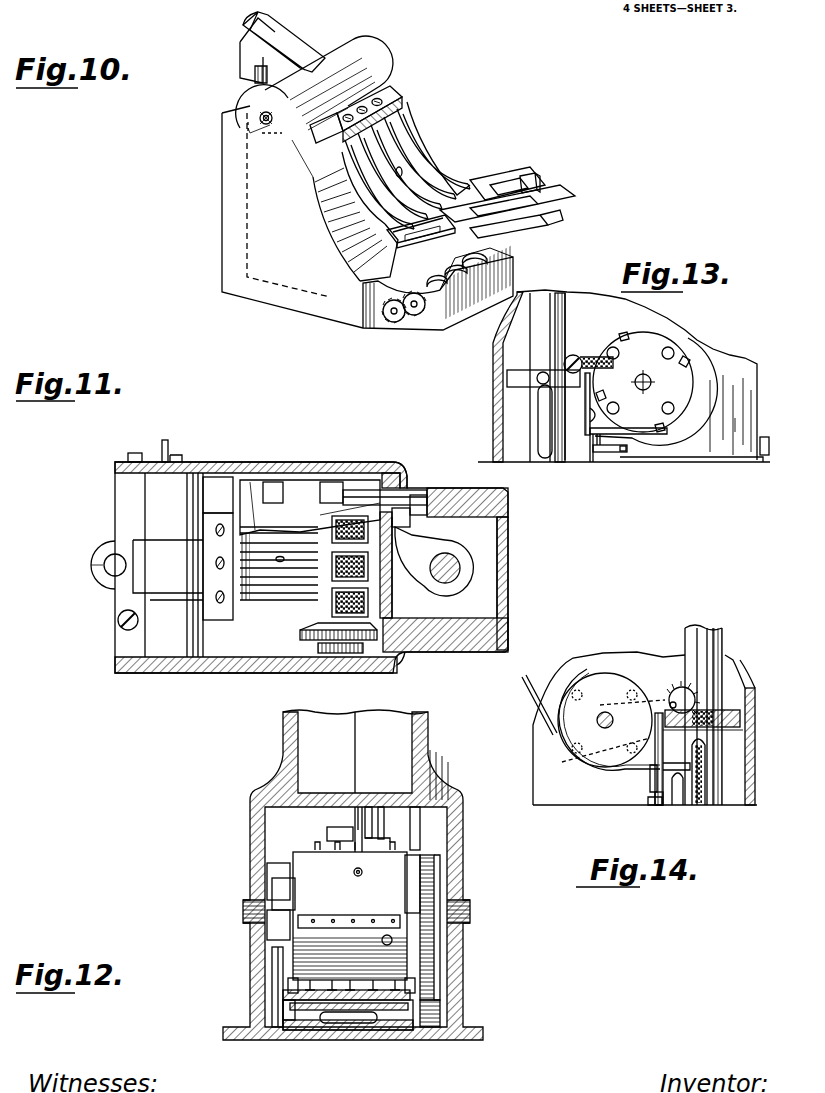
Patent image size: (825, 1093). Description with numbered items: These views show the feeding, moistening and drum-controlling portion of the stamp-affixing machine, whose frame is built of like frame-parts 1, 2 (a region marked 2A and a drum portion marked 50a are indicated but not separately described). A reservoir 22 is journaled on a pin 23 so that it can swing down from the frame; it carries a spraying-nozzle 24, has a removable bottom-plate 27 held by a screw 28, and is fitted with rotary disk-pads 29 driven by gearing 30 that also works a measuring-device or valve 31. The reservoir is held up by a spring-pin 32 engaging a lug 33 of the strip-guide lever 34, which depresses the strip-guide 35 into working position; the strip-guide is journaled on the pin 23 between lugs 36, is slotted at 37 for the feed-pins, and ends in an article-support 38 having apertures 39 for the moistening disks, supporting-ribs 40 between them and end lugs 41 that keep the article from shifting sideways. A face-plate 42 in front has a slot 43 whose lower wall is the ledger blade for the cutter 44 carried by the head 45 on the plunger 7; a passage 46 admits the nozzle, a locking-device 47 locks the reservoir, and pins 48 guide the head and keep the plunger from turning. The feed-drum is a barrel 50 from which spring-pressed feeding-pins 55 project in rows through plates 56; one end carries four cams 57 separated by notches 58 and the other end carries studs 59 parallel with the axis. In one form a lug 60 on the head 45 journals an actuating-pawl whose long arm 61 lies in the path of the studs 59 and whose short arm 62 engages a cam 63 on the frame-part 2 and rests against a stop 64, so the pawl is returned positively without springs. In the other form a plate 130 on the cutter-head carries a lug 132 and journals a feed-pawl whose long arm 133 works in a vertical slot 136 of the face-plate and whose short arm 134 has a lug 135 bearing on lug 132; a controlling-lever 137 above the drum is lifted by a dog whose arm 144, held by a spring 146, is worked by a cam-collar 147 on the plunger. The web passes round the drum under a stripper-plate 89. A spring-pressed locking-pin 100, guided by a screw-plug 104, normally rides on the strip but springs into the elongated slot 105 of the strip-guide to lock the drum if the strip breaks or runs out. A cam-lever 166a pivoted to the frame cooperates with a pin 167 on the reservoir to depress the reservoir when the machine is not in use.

In FIG. 13, the frame-part 1 is at (503, 410).
In FIG. 11, the frame-part 1 is at (311, 549).
In FIG. 12, the frame-part 1 is at (250, 834).
In FIG. 11, the frame-part 2 is at (185, 673).
In FIG. 12, the frame-part 2 is at (463, 842).
In FIG. 14, the frame-part 2 is at (755, 685).
In FIG. 14, the casing bottom 2A is at (655, 805).
In FIG. 12, the plunger 7 is at (351, 829).
In FIG. 14, the plunger 7 is at (722, 640).
In FIG. 10, the reservoir 22 is at (222, 248).
In FIG. 13, the reservoir 22 is at (719, 397).
In FIG. 11, the reservoir 22 is at (205, 652).
In FIG. 12, the reservoir 22 is at (295, 1032).
In FIG. 14, the reservoir 22 is at (565, 805).
In FIG. 10, the pin 23 is at (264, 126).
In FIG. 11, the pin 23 is at (183, 455).
In FIG. 13, the spraying-nozzle 24 is at (630, 443).
In FIG. 13, the removable bottom-plate 27 is at (680, 462).
In FIG. 13, the screw 28 is at (769, 448).
In FIG. 10, the rotary disk-pads 29 is at (445, 258).
In FIG. 11, the rotary disk-pads 29 is at (383, 583).
In FIG. 12, the rotary disk-pads 29 is at (370, 1025).
In FIG. 10, the gearing 30 is at (413, 318).
In FIG. 11, the gearing 30 is at (345, 655).
In FIG. 12, the gearing 30 is at (440, 960).
In FIG. 12, the measuring-device or valve 31 is at (322, 1032).
In FIG. 10, the spring-pin 32 is at (255, 77).
In FIG. 11, the spring-pin 32 is at (112, 580).
In FIG. 10, the lug 33 is at (245, 50).
In FIG. 10, the strip-guide lever 34 is at (272, 50).
In FIG. 11, the strip-guide lever 34 is at (150, 555).
In FIG. 10, the strip-guide 35 is at (402, 97).
In FIG. 11, the strip-guide 35 is at (235, 615).
In FIG. 12, the strip-guide 35 is at (290, 995).
In FIG. 14, the strip-guide 35 is at (524, 694).
In FIG. 10, the lugs 36 is at (378, 55).
In FIG. 11, the lugs 36 is at (133, 688).
In FIG. 10, the slot 37 is at (400, 138).
In FIG. 11, the slot 37 is at (300, 572).
In FIG. 12, the slot 37 is at (405, 982).
In FIG. 10, the article-support 38 is at (480, 182).
In FIG. 10, the apertures 39 is at (545, 193).
In FIG. 10, the supporting-ribs 40 is at (505, 218).
In FIG. 12, the supporting-ribs 40 is at (288, 1022).
In FIG. 10, the end lugs 41 is at (538, 182).
In FIG. 12, the end lugs 41 is at (288, 985).
In FIG. 13, the face-plate 42 is at (590, 458).
In FIG. 11, the face-plate 42 is at (400, 663).
In FIG. 14, the face-plate 42 is at (648, 770).
In FIG. 13, the slot 43 is at (590, 440).
In FIG. 14, the slot 43 is at (648, 792).
In FIG. 14, the cutter 44 is at (670, 759).
In FIG. 13, the head 45 is at (510, 376).
In FIG. 11, the head 45 is at (485, 553).
In FIG. 14, the head 45 is at (742, 720).
In FIG. 14, the passage 46 is at (661, 805).
In FIG. 13, the locking-device 47 is at (612, 452).
In FIG. 13, the pins or lugs 48 is at (548, 380).
In FIG. 13, the cylinder or barrel 50 is at (680, 400).
In FIG. 12, the cylinder or barrel 50 is at (350, 916).
In FIG. 13, the disc hub 50a is at (652, 382).
In FIG. 12, the disc hub 50a is at (248, 912).
In FIG. 14, the disc hub 50a is at (597, 722).
In FIG. 12, the feeding-pin 55 is at (330, 848).
In FIG. 14, the feeding-pin 55 is at (620, 680).
In FIG. 12, the plates 56 is at (383, 920).
In FIG. 12, the cams 57 is at (420, 885).
In FIG. 12, the notches 58 is at (434, 912).
In FIG. 13, the studs 59 is at (620, 353).
In FIG. 11, the studs 59 is at (320, 490).
In FIG. 12, the studs 59 is at (268, 886).
In FIG. 14, the studs 59 is at (580, 768).
In FIG. 13, the lug 60 is at (598, 336).
In FIG. 14, the lug 60 is at (663, 708).
In FIG. 13, the long arm 61 is at (608, 368).
In FIG. 14, the long arm 61 is at (598, 705).
In FIG. 13, the short arm 62 is at (547, 377).
In FIG. 14, the short arm 62 is at (692, 690).
In FIG. 14, the cam 63 is at (685, 805).
In FIG. 13, the stop 64 is at (580, 352).
In FIG. 14, the stop 64 is at (640, 700).
In FIG. 13, the stripper-plate 89 is at (577, 404).
In FIG. 14, the stripper-plate 89 is at (692, 766).
In FIG. 12, the locking-pin 100 is at (353, 872).
In FIG. 12, the screw-plug 104 is at (364, 872).
In FIG. 10, the elongated slot 105 is at (405, 170).
In FIG. 11, the elongated slot 105 is at (275, 625).
In FIG. 11, the plate 130 is at (448, 553).
In FIG. 11, the vertically-extending lug 132 is at (405, 523).
In FIG. 11, the long arm 133 is at (358, 490).
In FIG. 12, the long arm 133 is at (275, 962).
In FIG. 11, the short arm 134 is at (432, 493).
In FIG. 11, the horizontally-extending lug 135 is at (420, 500).
In FIG. 11, the vertical slot 136 is at (398, 490).
In FIG. 12, the controlling-lever 137 is at (420, 815).
In FIG. 12, the arm 144 is at (382, 812).
In FIG. 12, the spring 146 is at (368, 815).
In FIG. 12, the cam-projection or collar 147 is at (330, 830).
In FIG. 11, the cam-lever 166a is at (155, 455).
In FIG. 11, the pin 167 is at (134, 452).